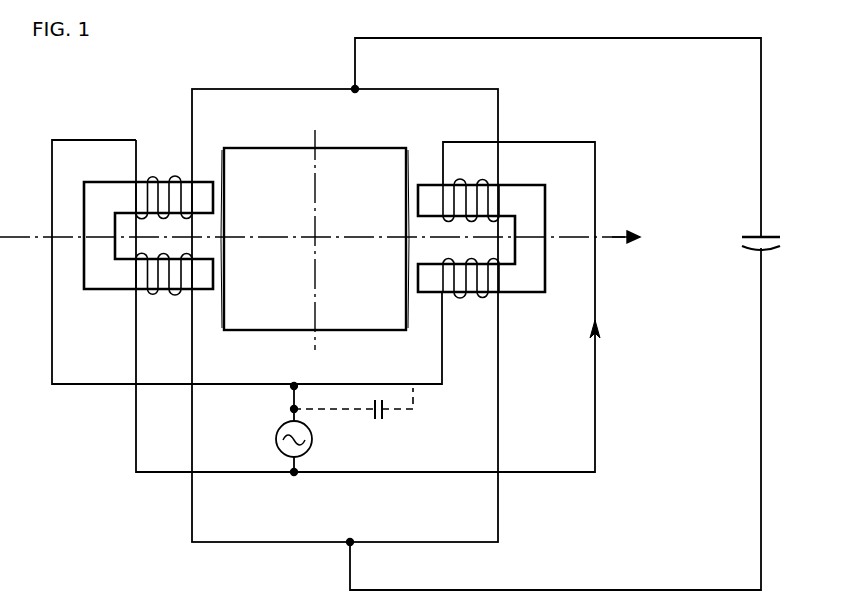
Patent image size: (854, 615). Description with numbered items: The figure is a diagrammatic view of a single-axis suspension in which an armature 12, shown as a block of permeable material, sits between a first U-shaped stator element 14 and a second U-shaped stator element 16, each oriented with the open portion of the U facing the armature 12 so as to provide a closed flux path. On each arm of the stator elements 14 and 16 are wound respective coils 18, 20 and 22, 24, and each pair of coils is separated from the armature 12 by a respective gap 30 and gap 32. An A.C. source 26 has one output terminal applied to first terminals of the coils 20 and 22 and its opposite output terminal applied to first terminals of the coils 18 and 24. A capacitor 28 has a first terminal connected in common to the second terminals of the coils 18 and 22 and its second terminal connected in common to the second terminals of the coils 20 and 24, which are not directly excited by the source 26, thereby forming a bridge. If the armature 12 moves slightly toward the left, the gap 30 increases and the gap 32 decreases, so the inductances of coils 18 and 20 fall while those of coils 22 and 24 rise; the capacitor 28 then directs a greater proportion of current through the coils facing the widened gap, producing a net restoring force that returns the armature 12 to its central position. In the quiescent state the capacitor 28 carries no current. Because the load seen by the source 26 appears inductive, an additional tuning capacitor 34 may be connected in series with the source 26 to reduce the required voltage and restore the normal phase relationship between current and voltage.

The armature 12 is at (348, 157).
The first U-shaped stator element 14 is at (537, 200).
The second U-shaped stator element 16 is at (95, 193).
The coil 18 is at (457, 181).
The coil 20 is at (479, 297).
The coil 22 is at (151, 178).
The coil 24 is at (150, 293).
The A.C. source 26 is at (275, 440).
The capacitor 28 is at (768, 233).
The gap 30 is at (412, 193).
The gap 32 is at (219, 193).
The tuning capacitor 34 is at (385, 413).